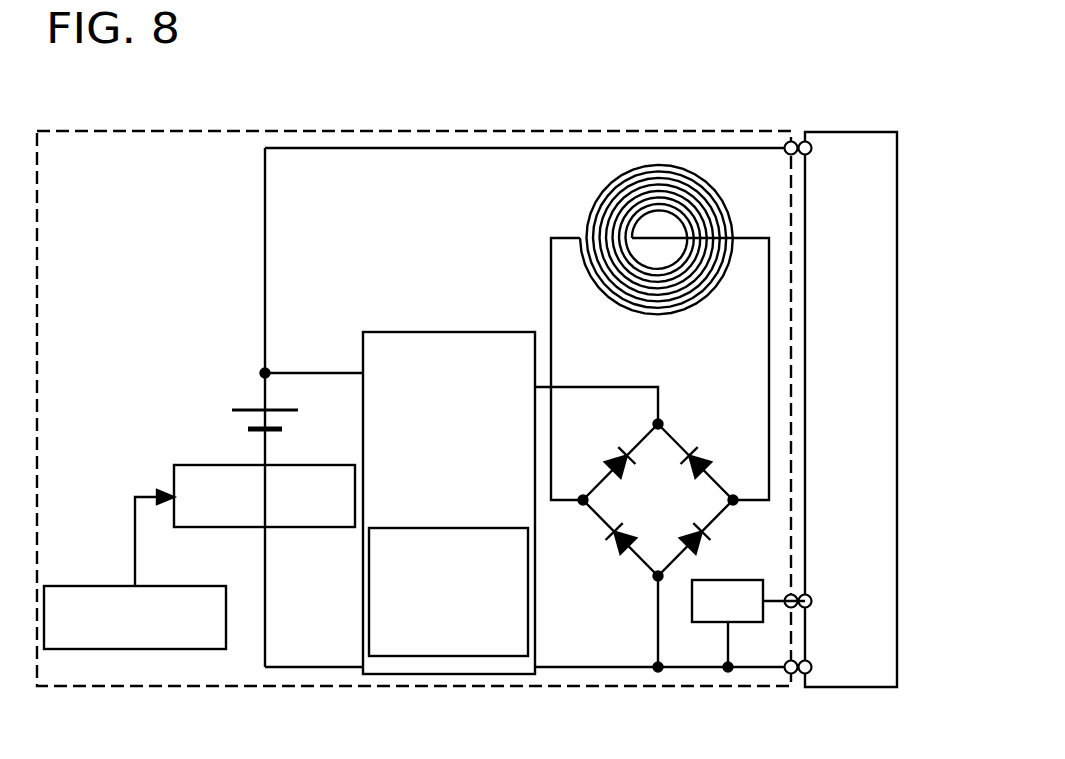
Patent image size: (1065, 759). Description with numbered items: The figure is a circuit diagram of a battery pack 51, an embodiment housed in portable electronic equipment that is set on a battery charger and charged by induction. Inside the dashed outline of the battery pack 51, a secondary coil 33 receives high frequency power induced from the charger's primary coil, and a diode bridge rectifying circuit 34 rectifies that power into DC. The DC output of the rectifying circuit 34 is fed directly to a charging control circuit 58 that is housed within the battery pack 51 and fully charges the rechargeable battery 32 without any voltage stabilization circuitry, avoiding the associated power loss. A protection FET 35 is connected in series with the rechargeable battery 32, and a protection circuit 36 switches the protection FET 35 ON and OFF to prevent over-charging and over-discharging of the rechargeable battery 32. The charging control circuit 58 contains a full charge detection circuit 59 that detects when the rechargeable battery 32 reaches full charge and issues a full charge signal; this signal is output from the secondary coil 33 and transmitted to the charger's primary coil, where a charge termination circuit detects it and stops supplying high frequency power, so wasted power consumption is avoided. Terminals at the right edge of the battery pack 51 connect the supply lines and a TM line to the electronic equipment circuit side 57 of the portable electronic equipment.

The battery pack 51 is at (365, 131).
The electronic equipment circuit side 57 is at (864, 131).
The rechargeable battery 32 is at (252, 408).
The secondary coil 33 is at (588, 203).
The rectifying circuit 34 is at (750, 435).
The protection FET 35 is at (220, 465).
The protection circuit 36 is at (137, 649).
The charging control circuit 58 is at (472, 332).
The full charge detection circuit 59 is at (528, 607).